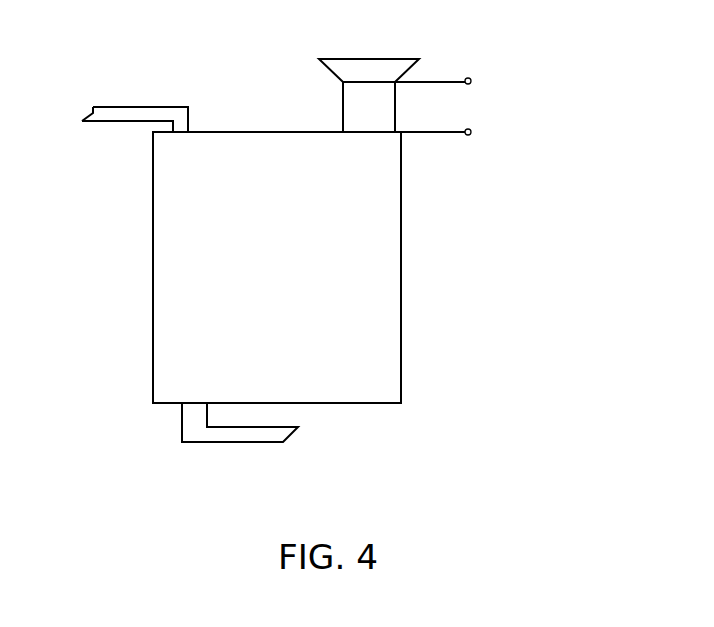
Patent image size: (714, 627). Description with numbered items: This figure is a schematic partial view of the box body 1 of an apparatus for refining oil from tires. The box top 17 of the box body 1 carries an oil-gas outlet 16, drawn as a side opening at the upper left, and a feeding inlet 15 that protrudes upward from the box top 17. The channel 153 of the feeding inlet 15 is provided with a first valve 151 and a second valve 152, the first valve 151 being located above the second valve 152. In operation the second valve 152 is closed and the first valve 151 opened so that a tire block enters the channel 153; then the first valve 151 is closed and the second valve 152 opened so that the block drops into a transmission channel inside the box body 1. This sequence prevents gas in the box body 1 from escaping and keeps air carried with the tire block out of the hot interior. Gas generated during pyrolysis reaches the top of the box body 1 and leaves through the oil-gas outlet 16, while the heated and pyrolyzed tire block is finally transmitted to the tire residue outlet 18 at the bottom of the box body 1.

The box body 1 is at (418, 274).
The feeding inlet 15 is at (340, 58).
The first valve 151 is at (471, 79).
The second valve 152 is at (471, 130).
The channel 153 is at (382, 107).
The oil-gas outlet 16 is at (180, 133).
The box top 17 is at (285, 131).
The tire residue outlet 18 is at (193, 418).